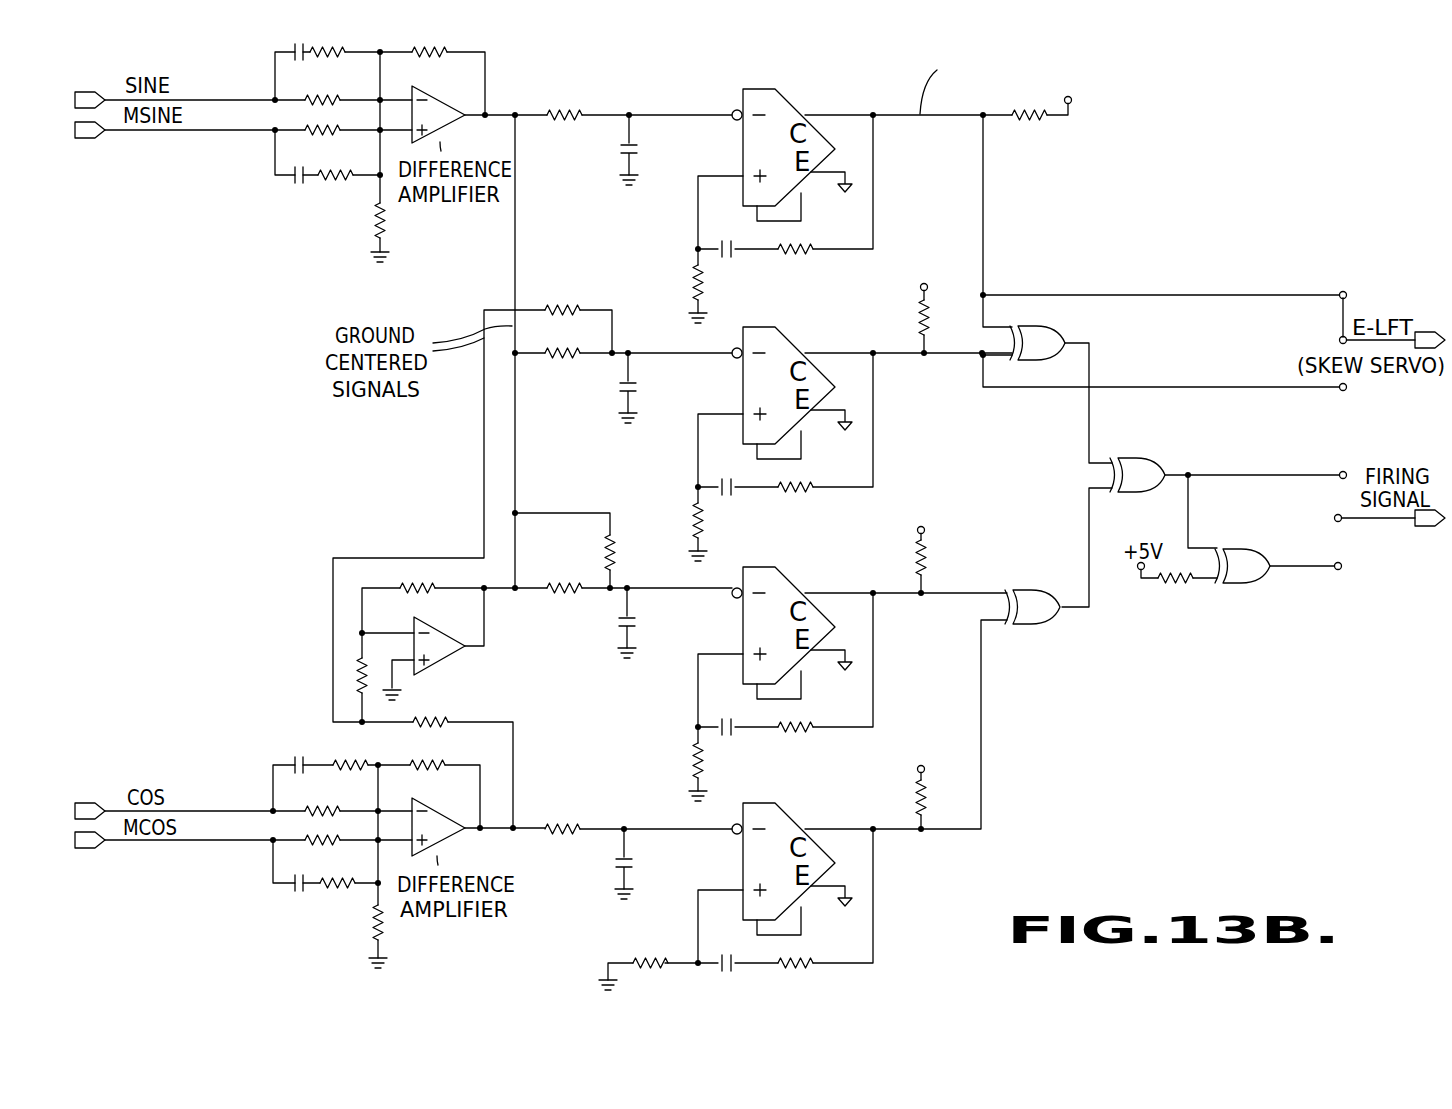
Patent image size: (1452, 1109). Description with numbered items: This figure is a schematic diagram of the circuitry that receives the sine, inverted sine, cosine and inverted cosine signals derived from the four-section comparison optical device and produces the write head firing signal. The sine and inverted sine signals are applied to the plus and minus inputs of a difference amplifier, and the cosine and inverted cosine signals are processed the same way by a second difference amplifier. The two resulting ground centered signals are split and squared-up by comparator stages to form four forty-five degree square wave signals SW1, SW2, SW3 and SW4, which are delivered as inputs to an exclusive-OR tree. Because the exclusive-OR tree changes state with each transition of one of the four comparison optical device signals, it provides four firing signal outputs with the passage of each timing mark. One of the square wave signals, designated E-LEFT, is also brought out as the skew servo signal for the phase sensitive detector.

The 45° square wave signal SW1 is at (897, 119).
The 45° square wave signal SW2 is at (945, 357).
The 45° square wave signal SW3 is at (955, 597).
The 45° square wave signal SW4 is at (957, 833).